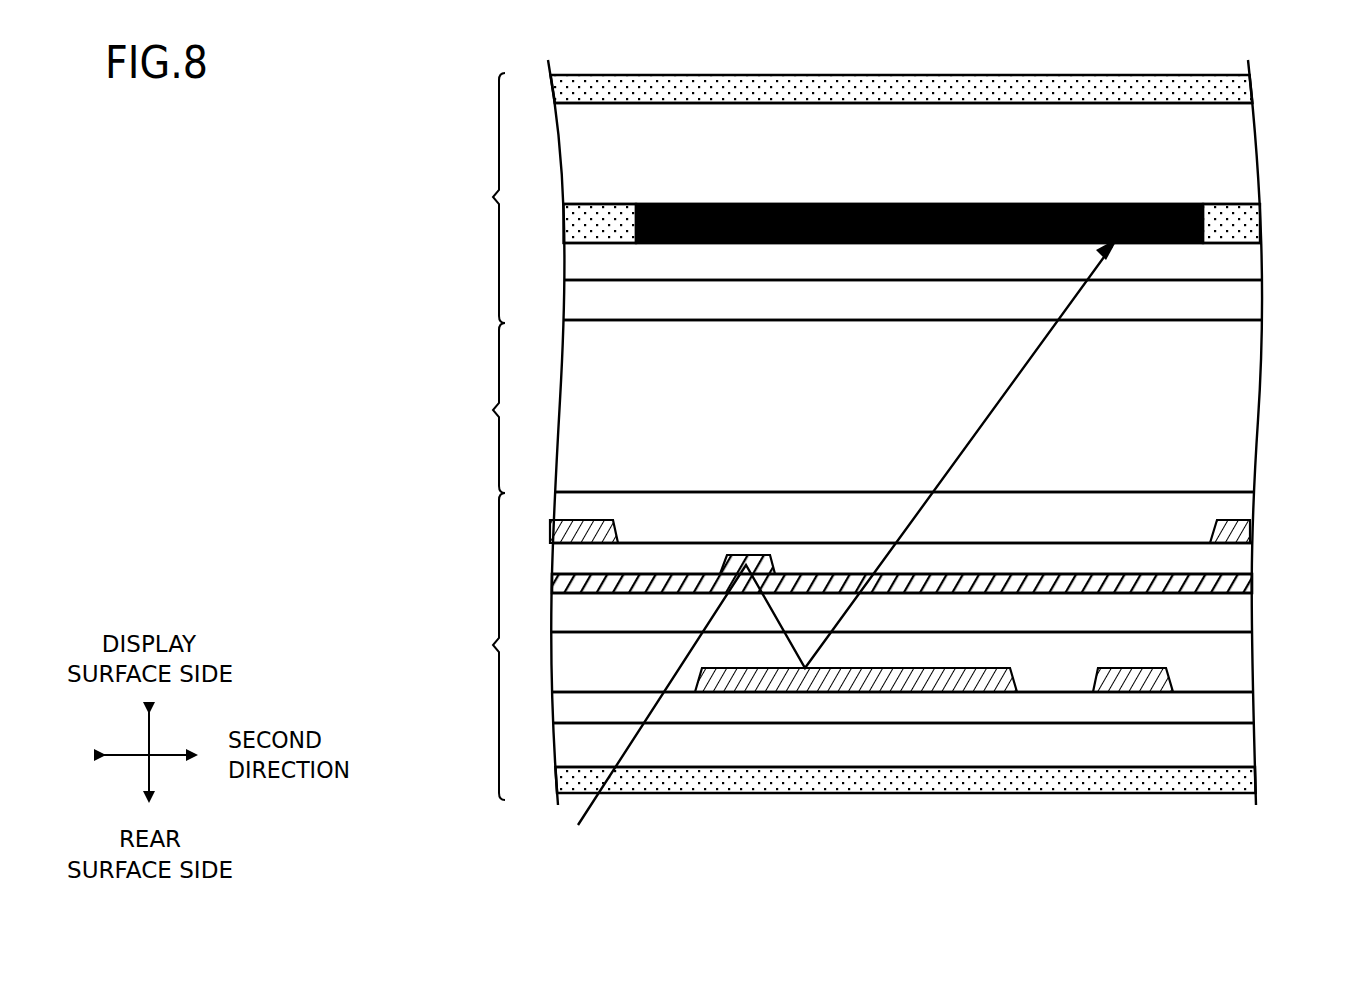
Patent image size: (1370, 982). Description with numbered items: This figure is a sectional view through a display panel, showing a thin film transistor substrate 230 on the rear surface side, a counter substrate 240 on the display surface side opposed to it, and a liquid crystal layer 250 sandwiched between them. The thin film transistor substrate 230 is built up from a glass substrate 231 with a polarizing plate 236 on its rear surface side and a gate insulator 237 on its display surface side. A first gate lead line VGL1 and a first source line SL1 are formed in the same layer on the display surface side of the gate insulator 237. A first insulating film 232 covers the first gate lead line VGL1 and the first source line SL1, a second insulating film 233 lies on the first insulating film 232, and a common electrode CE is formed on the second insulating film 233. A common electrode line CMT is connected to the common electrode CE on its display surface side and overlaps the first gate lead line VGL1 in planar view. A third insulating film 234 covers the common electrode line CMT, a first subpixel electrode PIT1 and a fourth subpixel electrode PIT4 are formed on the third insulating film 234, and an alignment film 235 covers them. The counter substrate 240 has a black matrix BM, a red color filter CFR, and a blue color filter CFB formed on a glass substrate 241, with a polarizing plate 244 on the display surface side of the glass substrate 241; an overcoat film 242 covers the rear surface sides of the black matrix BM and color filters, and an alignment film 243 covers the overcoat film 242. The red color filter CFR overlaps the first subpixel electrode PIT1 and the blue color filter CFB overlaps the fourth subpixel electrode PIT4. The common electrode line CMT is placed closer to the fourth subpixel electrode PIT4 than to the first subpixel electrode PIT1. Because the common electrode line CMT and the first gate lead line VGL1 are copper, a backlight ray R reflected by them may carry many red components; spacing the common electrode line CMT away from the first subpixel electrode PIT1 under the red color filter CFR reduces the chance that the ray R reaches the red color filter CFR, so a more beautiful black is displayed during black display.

The polarizing plate 244 is at (1247, 88).
The glass substrate 241 is at (1246, 158).
The counter substrate 240 is at (470, 198).
The blue color filter CFB is at (610, 230).
The black matrix BM is at (803, 230).
The red color filter CFR is at (1222, 230).
The overcoat film 242 is at (1247, 262).
The alignment film 243 is at (1247, 305).
The liquid crystal layer 250 is at (849, 406).
The alignment film 235 is at (1232, 510).
The third insulating film 234 is at (1232, 560).
The second insulating film 233 is at (1232, 617).
The first insulating film 232 is at (1232, 660).
The gate insulator 237 is at (1232, 710).
The glass substrate 231 is at (1232, 743).
The polarizing plate 236 is at (1232, 783).
The thin film transistor substrate 230 is at (470, 646).
The fourth subpixel electrode PIT4 is at (580, 543).
The first subpixel electrode PIT1 is at (1225, 543).
The common electrode line CMT is at (747, 563).
The common electrode CE is at (1040, 593).
The first gate lead line VGL1 is at (860, 692).
The first source line SL1 is at (1130, 692).
The ray R is at (650, 735).